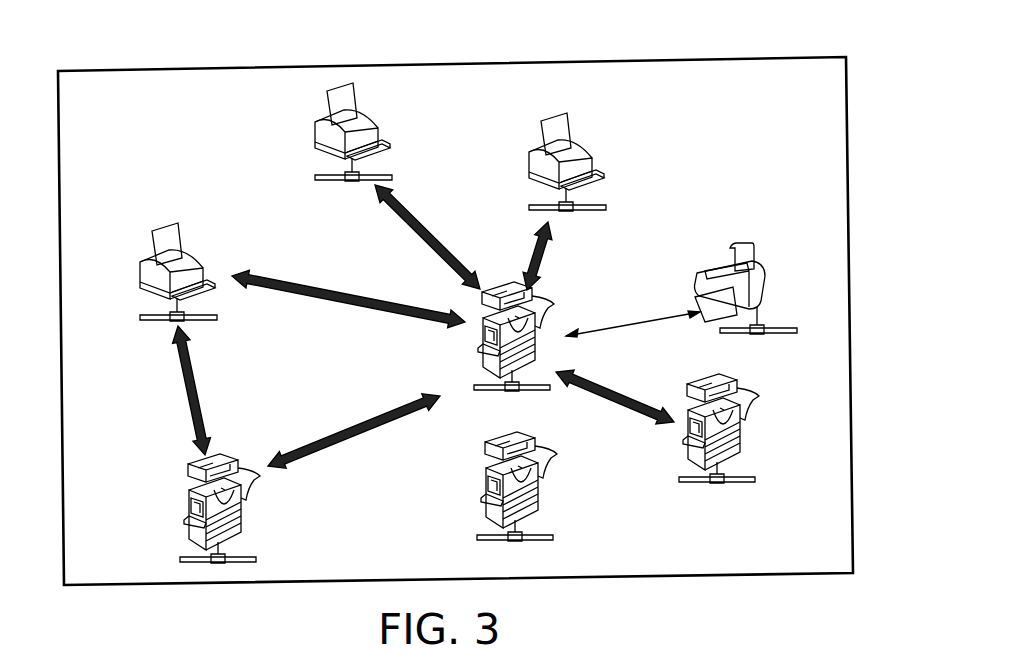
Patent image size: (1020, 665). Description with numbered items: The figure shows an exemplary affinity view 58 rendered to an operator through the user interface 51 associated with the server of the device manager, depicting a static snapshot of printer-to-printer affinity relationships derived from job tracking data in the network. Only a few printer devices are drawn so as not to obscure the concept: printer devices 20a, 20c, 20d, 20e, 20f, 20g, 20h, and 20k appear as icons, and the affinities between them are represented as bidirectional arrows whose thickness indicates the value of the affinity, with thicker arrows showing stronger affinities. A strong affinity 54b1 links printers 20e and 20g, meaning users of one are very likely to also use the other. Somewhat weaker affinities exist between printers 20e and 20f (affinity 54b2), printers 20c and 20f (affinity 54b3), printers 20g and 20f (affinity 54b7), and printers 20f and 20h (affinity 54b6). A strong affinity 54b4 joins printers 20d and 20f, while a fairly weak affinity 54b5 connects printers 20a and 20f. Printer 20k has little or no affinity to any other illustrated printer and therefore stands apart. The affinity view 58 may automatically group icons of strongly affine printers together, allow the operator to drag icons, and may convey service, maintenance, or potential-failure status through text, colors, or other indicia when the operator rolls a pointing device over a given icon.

The user interface 51 is at (88, 34).
The affinity view 58 is at (847, 78).
The printer device 20a is at (697, 282).
The printer device 20c is at (315, 149).
The printer device 20d is at (529, 180).
The printer device 20e is at (139, 290).
The printer device 20f is at (483, 363).
The printer device 20g is at (190, 535).
The printer device 20h is at (740, 438).
The printer device 20k is at (538, 516).
The affinity 54b1 is at (189, 400).
The affinity 54b2 is at (340, 310).
The affinity 54b3 is at (412, 236).
The affinity 54b4 is at (547, 258).
The affinity 54b5 is at (626, 329).
The affinity 54b6 is at (633, 404).
The affinity 54b7 is at (355, 438).